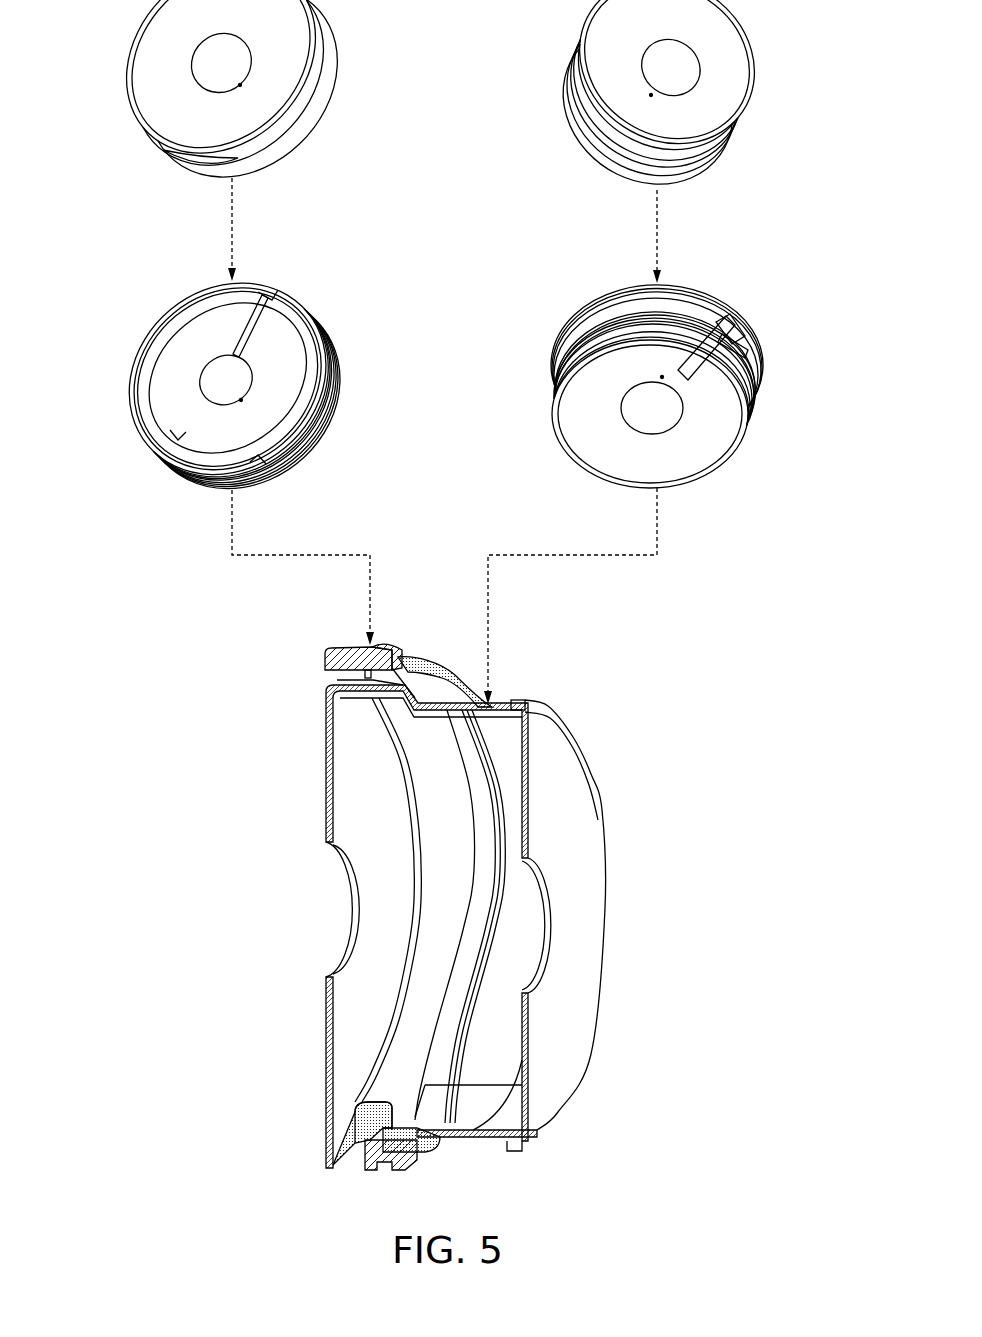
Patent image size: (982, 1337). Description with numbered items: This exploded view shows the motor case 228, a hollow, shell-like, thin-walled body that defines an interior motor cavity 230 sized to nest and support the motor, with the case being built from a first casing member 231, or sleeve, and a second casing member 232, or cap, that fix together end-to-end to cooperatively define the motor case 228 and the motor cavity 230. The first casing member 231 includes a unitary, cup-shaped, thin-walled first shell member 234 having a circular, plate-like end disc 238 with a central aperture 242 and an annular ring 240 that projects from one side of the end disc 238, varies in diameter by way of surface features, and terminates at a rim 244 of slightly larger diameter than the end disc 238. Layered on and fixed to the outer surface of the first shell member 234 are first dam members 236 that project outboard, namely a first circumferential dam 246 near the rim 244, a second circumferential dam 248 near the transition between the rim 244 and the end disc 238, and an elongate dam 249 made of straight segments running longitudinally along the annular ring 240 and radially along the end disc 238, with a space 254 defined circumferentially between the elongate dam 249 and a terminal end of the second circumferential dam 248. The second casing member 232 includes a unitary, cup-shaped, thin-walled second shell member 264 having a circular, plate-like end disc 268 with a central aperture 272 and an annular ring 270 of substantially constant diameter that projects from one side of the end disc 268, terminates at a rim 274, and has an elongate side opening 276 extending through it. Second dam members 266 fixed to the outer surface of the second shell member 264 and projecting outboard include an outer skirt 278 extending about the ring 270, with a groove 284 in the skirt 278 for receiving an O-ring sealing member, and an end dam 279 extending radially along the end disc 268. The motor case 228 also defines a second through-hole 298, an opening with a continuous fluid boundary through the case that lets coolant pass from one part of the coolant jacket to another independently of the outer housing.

The motor case 228 is at (300, 783).
The motor cavity 230 is at (352, 838).
The first casing member 231 is at (565, 312).
The second casing member 232 is at (128, 323).
The first shell member 234 is at (740, 36).
The first dam member 236 is at (702, 368).
The end disc 238 is at (677, 28).
The annular ring 240 is at (718, 158).
The central aperture 242 is at (690, 82).
The rim 244 is at (590, 173).
The first circumferential dam 246 is at (617, 300).
The second circumferential dam 248 is at (568, 354).
The elongate dam 249 is at (732, 340).
The space 254 is at (745, 362).
The second shell member 264 is at (155, 42).
The second dam member 266 is at (200, 297).
The end disc 268 is at (277, 28).
The annular ring 270 is at (290, 140).
The central aperture 272 is at (210, 78).
The rim 274 is at (322, 127).
The elongate side opening 276 is at (196, 165).
The outer skirt 278 is at (140, 442).
The end dam 279 is at (253, 322).
The groove 284 is at (415, 657).
The second through-hole 298 is at (350, 672).